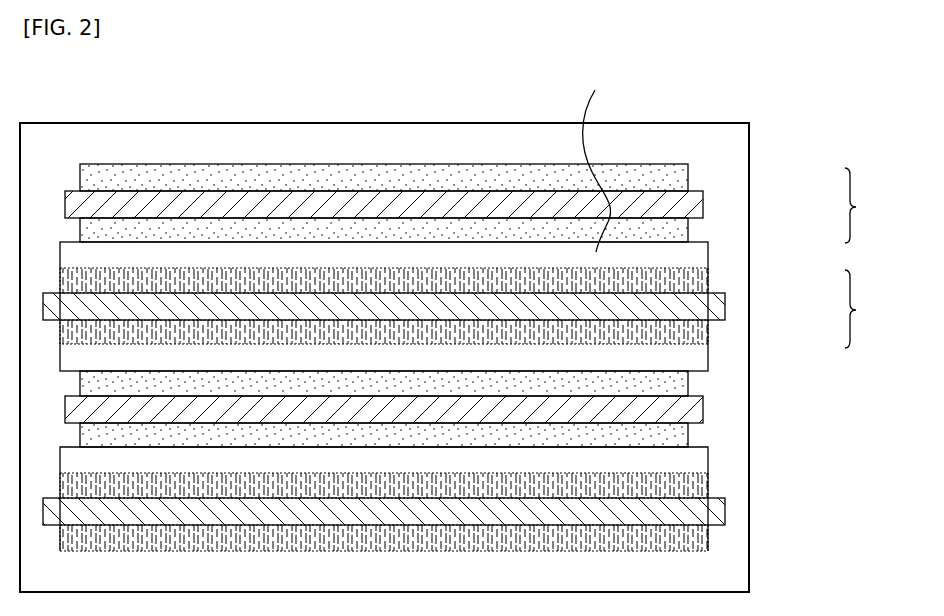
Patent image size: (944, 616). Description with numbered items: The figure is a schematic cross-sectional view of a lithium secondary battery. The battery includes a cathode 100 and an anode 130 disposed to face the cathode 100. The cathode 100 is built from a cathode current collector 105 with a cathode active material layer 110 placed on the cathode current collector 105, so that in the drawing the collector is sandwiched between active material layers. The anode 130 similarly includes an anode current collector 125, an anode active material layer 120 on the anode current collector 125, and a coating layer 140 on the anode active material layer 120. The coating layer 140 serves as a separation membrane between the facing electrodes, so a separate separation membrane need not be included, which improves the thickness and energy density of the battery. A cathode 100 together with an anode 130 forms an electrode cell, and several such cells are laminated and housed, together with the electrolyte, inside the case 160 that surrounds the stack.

The cathode 100 is at (875, 205).
The cathode current collector 105 is at (698, 204).
The cathode active material layer 110 is at (680, 176).
The anode active material layer 120 is at (700, 281).
The anode current collector 125 is at (718, 308).
The anode 130 is at (483, 396).
The coating layer 140 is at (597, 156).
The case 160 is at (750, 512).